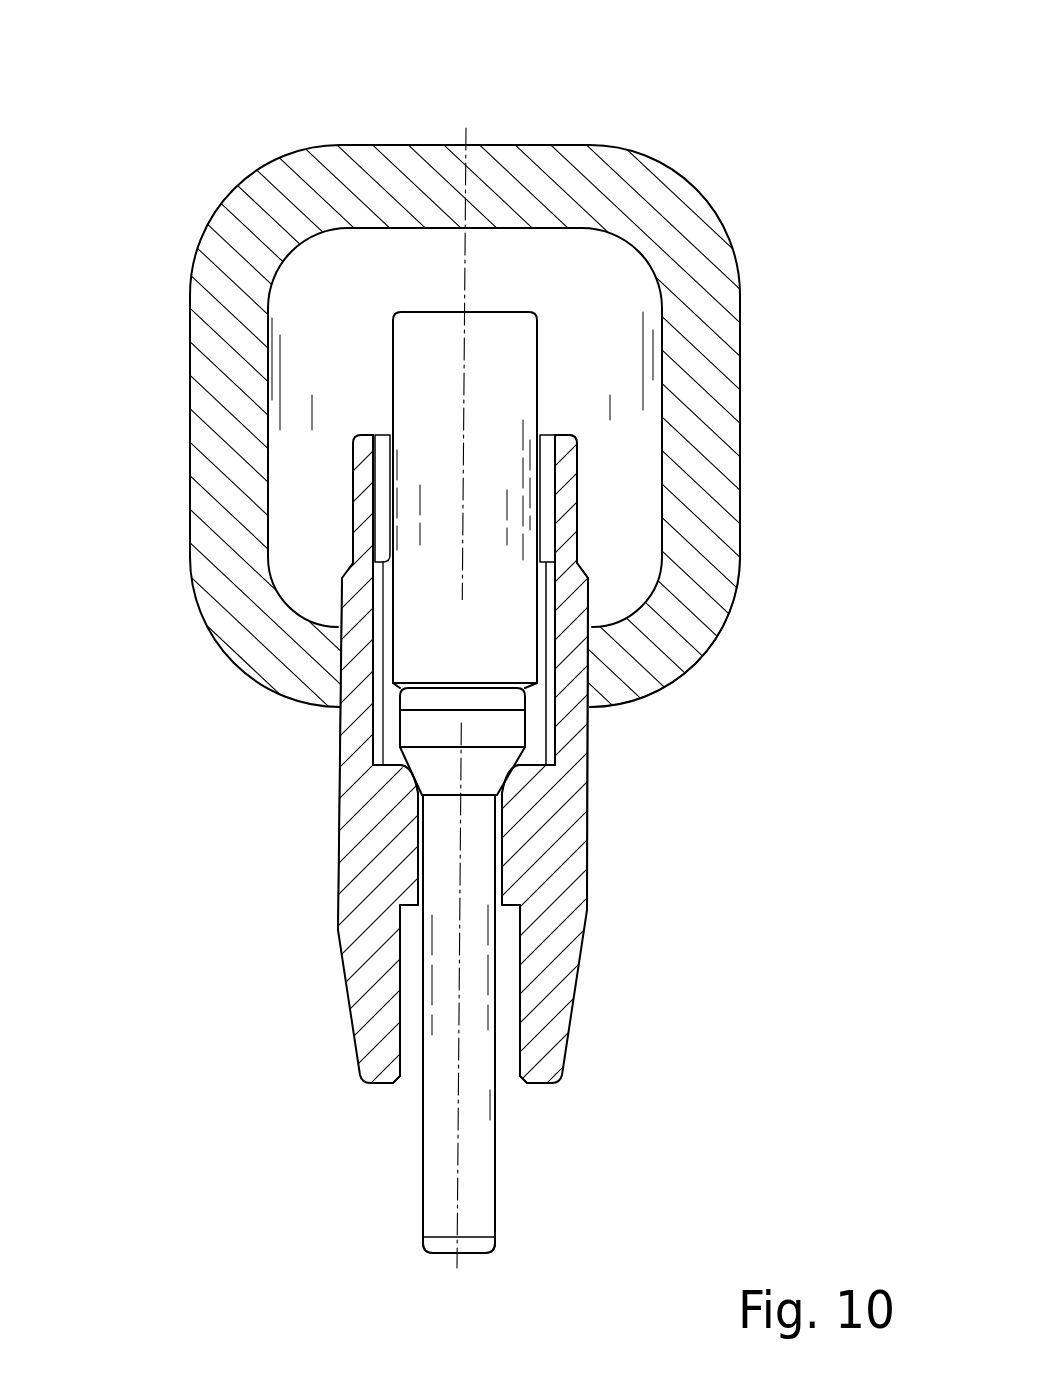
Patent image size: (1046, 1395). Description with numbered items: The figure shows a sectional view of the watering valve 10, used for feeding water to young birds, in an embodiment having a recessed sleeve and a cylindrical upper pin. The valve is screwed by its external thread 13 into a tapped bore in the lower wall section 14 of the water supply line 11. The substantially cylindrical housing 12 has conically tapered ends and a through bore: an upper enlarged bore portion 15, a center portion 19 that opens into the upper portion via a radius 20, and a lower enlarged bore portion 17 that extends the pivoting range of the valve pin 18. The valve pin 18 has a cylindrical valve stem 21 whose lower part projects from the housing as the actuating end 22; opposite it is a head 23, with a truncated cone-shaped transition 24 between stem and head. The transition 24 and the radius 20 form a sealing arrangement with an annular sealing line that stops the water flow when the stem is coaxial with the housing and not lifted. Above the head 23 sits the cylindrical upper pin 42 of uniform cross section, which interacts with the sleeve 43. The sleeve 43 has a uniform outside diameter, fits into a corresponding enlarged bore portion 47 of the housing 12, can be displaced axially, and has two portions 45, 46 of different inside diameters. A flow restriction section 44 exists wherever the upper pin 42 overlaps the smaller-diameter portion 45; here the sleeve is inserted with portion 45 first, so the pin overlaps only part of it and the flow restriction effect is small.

The watering valve 10 is at (698, 100).
The water supply line 11 is at (720, 293).
The housing 12 is at (575, 870).
The external thread 13 is at (587, 752).
The lower wall section 14 is at (632, 708).
The upper enlarged bore portion 15 is at (543, 688).
The lower enlarged bore portion 17 is at (510, 997).
The valve pin 18 is at (423, 870).
The center portion of the through bore 19 is at (440, 841).
The radius 20 is at (425, 791).
The valve stem 21 is at (447, 970).
The actuating end 22 is at (443, 1187).
The head 23 is at (420, 726).
The truncated cone-shaped transition 24 is at (430, 765).
The cylindrical upper pin 42 is at (382, 381).
The sleeve 43 is at (340, 594).
The flow restriction section 44 is at (547, 603).
The sleeve portion with smaller inside diameter 45 is at (547, 650).
The sleeve portion with greater inside diameter 46 is at (578, 440).
The enlarged bore portion 47 is at (352, 480).